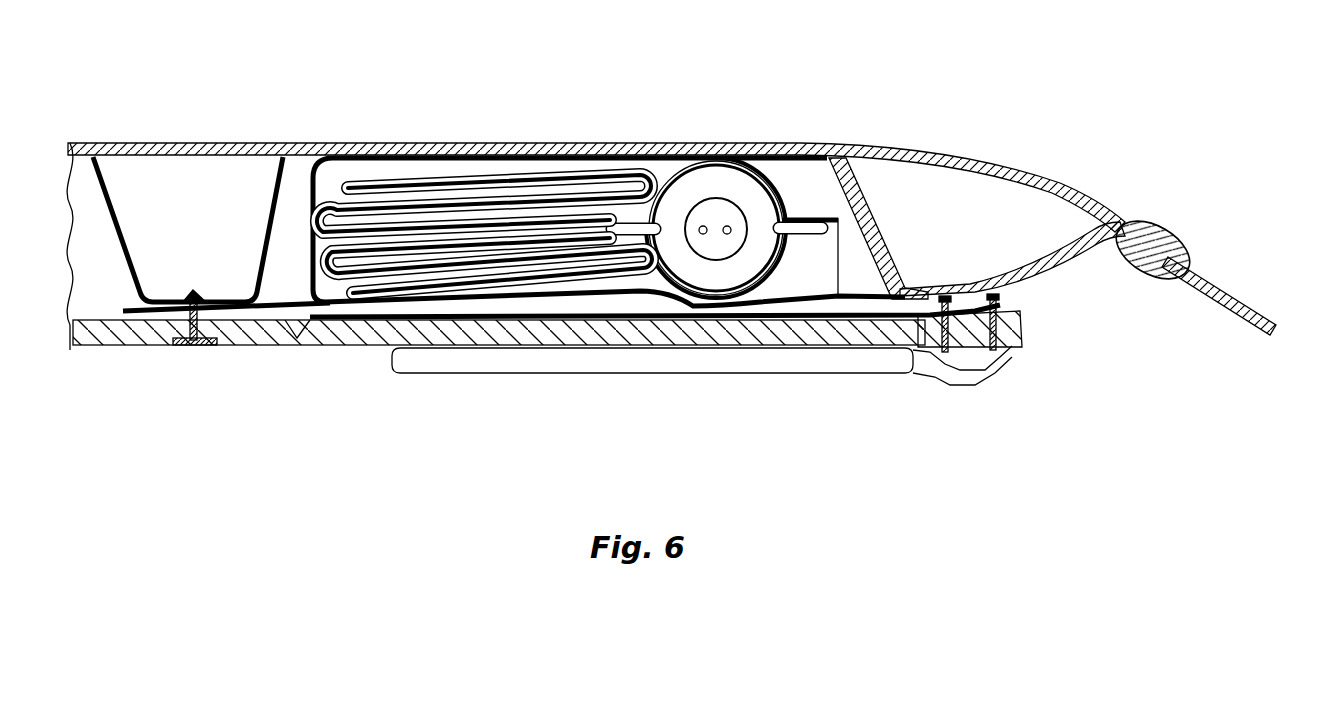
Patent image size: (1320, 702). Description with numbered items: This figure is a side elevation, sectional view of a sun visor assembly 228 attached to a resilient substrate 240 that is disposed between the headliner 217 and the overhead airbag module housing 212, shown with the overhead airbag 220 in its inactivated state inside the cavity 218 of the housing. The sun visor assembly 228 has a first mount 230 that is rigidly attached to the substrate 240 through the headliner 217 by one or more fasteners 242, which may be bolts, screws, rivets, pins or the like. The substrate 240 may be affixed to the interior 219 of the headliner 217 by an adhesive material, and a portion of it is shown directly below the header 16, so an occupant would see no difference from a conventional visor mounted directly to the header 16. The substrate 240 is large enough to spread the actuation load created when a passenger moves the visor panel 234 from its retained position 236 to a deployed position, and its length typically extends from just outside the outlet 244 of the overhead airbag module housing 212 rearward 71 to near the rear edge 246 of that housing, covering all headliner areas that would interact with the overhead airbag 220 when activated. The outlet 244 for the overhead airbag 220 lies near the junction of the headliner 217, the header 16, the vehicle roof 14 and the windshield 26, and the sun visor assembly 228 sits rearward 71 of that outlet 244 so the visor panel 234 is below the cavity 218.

The vehicle roof 14 is at (778, 150).
The header 16 is at (955, 193).
The windshield 26 is at (1207, 277).
The rearward direction 71 is at (762, 514).
The overhead airbag module housing 212 is at (535, 297).
The headliner 217 is at (380, 347).
The cavity 218 is at (331, 290).
The interior of the headliner 219 is at (432, 318).
The overhead airbag 220 is at (520, 185).
The sun visor assembly 228 is at (1030, 364).
The first mount 230 is at (1005, 317).
The visor panel 234 is at (585, 362).
The retained position 236 is at (655, 374).
The resilient substrate 240 is at (863, 318).
The fasteners 242 is at (1000, 352).
The outlet 244 is at (1103, 238).
The rear edge 246 is at (313, 223).